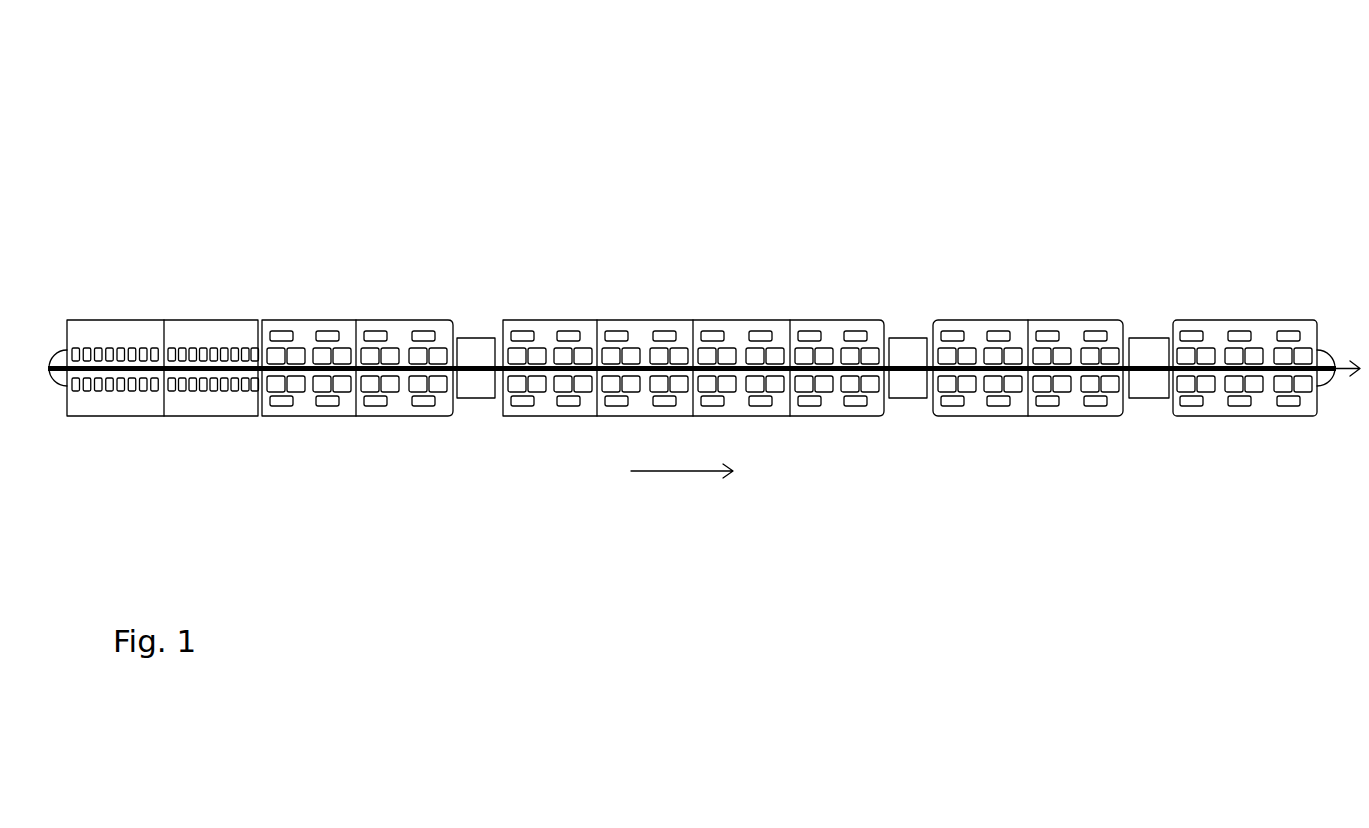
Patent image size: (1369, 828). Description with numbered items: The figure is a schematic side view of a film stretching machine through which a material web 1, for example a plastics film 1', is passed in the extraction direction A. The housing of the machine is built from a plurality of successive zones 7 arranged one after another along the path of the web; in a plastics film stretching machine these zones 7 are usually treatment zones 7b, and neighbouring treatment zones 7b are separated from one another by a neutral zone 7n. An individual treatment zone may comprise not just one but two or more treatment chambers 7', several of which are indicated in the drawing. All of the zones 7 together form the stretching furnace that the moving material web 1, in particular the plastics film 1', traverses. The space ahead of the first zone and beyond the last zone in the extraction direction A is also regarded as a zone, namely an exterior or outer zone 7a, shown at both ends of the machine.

The material web 1 is at (703, 304).
The plastics film 1' is at (703, 304).
The zone 7 is at (813, 424).
The treatment chamber 7' is at (455, 356).
The exterior zone 7a is at (43, 404).
The treatment zone 7b is at (267, 216).
The neutral zone 7n is at (481, 336).
The extraction direction A is at (682, 473).